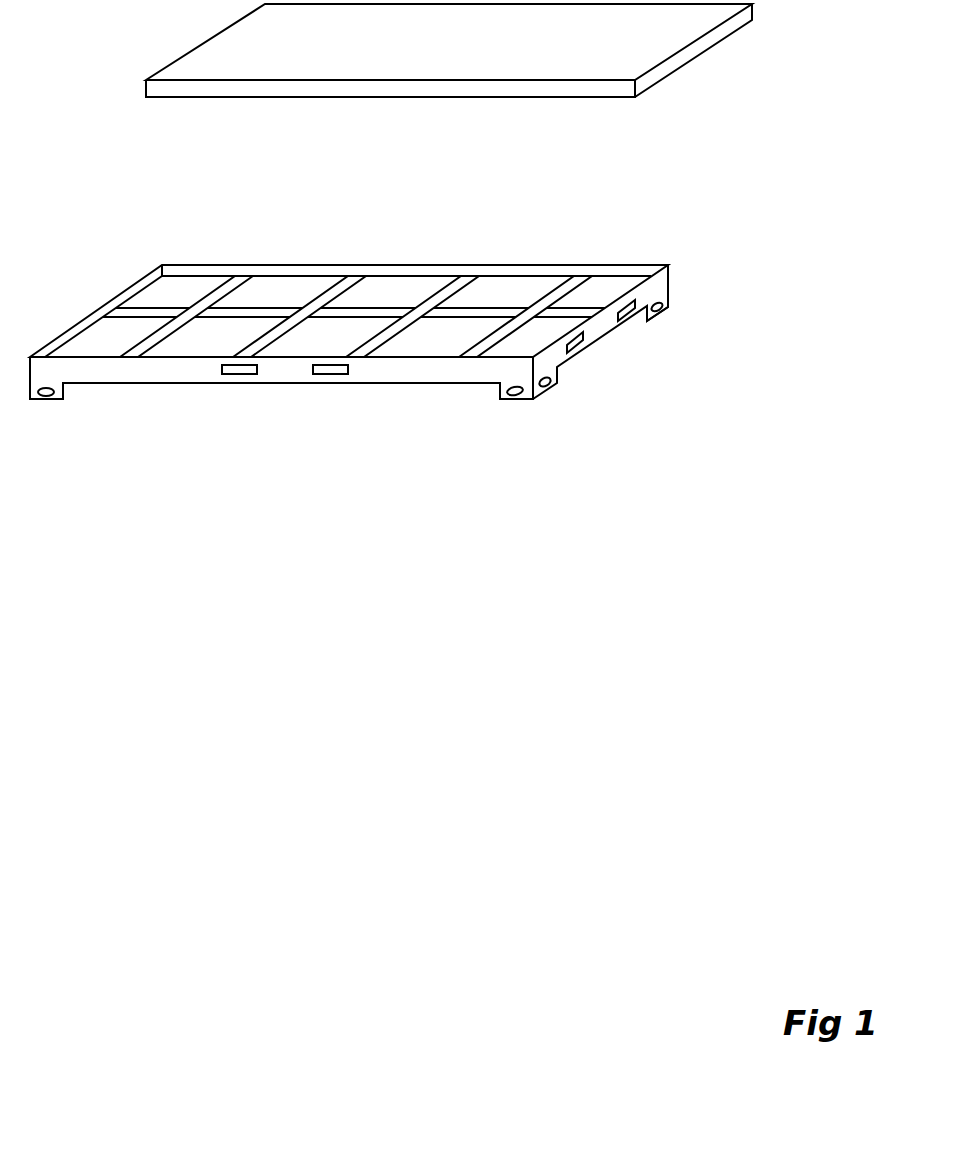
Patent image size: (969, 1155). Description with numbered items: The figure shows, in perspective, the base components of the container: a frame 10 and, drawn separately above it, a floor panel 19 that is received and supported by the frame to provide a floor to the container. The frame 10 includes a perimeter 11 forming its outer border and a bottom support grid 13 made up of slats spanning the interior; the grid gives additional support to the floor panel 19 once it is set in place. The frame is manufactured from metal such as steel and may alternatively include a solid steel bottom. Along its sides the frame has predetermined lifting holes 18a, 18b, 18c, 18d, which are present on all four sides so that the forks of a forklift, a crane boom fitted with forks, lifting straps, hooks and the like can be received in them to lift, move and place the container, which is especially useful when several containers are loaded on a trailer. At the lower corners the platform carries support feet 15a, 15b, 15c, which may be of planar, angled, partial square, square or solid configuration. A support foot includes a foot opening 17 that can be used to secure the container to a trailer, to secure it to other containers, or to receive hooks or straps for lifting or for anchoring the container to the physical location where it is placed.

The frame 10 is at (84, 318).
The perimeter 11 is at (390, 270).
The bottom support grid 13 is at (343, 283).
The support foot 15a is at (65, 387).
The support foot 15b is at (545, 400).
The support foot 15c is at (668, 300).
The foot opening 17 is at (502, 395).
The lifting hole 18a is at (228, 374).
The lifting hole 18b is at (330, 374).
The lifting hole 18c is at (583, 340).
The lifting hole 18d is at (625, 320).
The floor panel 19 is at (146, 86).